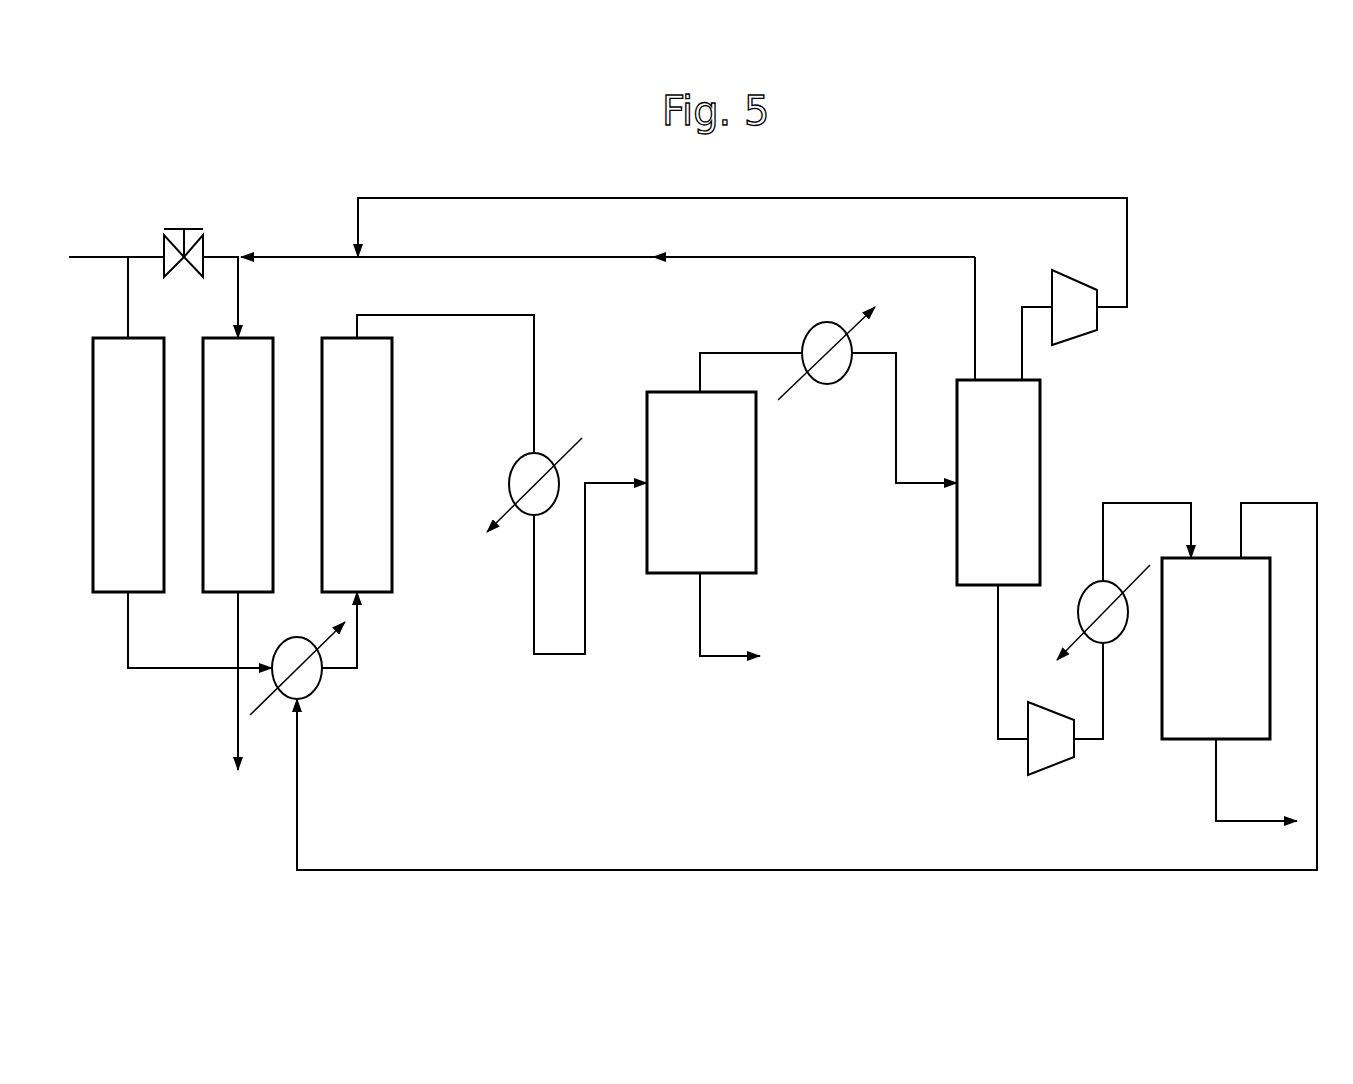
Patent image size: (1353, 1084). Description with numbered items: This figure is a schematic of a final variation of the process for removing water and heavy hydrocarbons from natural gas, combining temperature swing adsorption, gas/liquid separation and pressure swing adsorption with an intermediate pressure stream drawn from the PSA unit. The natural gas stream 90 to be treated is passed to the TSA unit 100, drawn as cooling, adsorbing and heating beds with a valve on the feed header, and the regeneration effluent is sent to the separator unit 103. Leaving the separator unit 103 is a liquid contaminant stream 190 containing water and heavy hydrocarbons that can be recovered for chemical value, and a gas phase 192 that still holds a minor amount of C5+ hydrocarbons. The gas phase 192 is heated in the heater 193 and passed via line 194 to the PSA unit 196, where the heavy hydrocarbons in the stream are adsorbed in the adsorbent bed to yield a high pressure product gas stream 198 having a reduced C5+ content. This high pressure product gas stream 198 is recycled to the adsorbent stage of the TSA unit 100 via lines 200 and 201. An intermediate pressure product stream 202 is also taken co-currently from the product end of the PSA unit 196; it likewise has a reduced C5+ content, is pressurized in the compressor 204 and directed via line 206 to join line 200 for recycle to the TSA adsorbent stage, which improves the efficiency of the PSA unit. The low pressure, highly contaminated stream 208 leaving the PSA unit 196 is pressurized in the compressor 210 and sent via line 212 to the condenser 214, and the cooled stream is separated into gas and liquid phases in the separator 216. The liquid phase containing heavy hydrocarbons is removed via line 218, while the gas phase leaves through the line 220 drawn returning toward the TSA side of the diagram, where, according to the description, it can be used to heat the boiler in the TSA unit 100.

The natural gas stream 90 is at (97, 257).
The TSA unit 100 is at (289, 327).
The line 201 is at (238, 307).
The separator unit 103 is at (666, 392).
The liquid contaminant stream 190 is at (700, 624).
The gas phase 192 is at (725, 353).
The heater 193 is at (806, 337).
The line 194 is at (898, 367).
The PSA unit 196 is at (957, 545).
The high pressure product gas stream 198 is at (977, 269).
The line 200 is at (609, 258).
The intermediate pressure product stream 202 is at (1022, 355).
The compressor 204 is at (1080, 282).
The line 206 is at (901, 198).
The low pressure contaminated stream 208 is at (998, 657).
The compressor 210 is at (1053, 766).
The line 212 is at (1103, 690).
The condenser 214 is at (1078, 615).
The separator 216 is at (1186, 741).
The line 218 is at (1258, 821).
The regeneration gas line 220 is at (1283, 503).